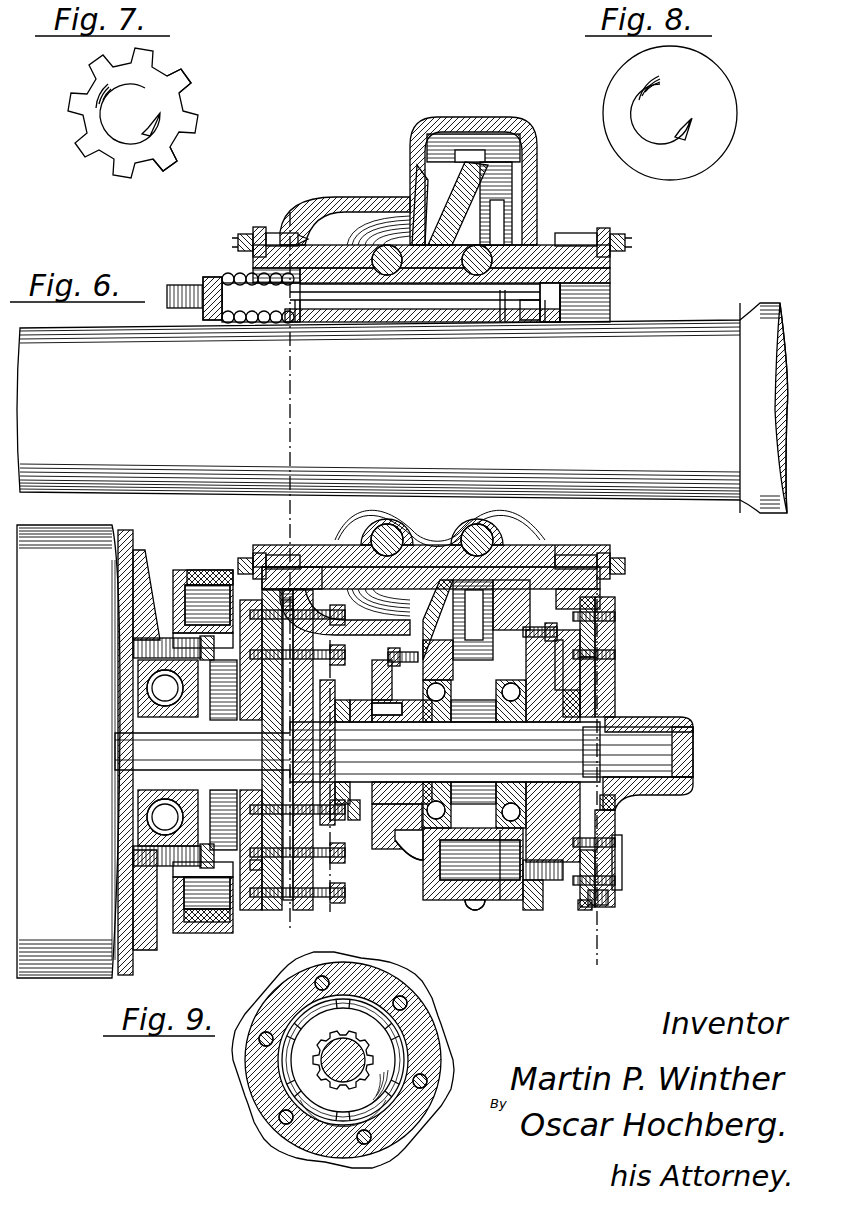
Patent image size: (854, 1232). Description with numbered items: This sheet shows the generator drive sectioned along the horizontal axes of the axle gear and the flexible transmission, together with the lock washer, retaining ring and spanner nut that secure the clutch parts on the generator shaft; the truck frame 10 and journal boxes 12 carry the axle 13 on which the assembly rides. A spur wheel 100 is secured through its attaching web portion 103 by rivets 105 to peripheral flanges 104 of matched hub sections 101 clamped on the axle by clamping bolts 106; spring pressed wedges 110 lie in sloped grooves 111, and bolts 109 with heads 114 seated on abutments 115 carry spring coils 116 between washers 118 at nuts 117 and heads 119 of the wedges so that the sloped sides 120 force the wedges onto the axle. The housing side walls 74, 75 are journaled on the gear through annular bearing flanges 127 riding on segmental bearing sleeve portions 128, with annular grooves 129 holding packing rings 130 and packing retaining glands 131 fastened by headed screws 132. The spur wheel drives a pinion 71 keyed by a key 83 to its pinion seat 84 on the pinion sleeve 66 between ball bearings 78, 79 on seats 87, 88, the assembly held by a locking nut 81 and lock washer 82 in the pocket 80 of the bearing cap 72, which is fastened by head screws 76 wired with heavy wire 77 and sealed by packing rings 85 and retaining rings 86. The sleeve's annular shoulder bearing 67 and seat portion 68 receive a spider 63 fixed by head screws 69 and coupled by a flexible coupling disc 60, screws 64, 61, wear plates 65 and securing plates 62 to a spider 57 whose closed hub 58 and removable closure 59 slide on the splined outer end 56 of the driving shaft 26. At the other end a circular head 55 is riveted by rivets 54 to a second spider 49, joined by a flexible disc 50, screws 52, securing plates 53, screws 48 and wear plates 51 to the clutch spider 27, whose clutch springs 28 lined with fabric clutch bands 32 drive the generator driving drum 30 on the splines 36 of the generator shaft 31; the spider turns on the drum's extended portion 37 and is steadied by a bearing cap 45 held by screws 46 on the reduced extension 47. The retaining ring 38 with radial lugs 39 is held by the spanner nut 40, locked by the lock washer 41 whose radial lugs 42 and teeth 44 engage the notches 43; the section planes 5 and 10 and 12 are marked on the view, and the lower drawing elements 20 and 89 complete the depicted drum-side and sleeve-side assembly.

In FIG. 6, the section line 5 is at (268, 215).
In FIG. 6, the truck frame 10 is at (322, 642).
In FIG. 6, the journal boxes 12 is at (608, 580).
In FIG. 6, the axle 13 is at (720, 322).
In FIG. 6, the drum 20 is at (100, 972).
In FIG. 6, the driving shaft 26 is at (630, 712).
In FIG. 9, the driving shaft 26 is at (365, 1060).
In FIG. 6, the clutch spider 27 is at (262, 605).
In FIG. 6, the clutch springs 28 is at (172, 590).
In FIG. 6, the generator driving drum 30 is at (185, 572).
In FIG. 6, the generator shaft 31 is at (115, 775).
In FIG. 6, the fabric clutch bands 32 is at (205, 568).
In FIG. 6, the splines 36 is at (196, 746).
In FIG. 9, the splines 36 is at (335, 1090).
In FIG. 6, the extended portion 37 is at (140, 720).
In FIG. 8, the retaining ring 38 is at (738, 122).
In FIG. 6, the retaining ring 38 is at (283, 862).
In FIG. 8, the radial lugs 39 is at (656, 88).
In FIG. 6, the spanner nut 40 is at (280, 840).
In FIG. 9, the spanner nut 40 is at (362, 1032).
In FIG. 7, the lock washer 41 is at (182, 118).
In FIG. 6, the lock washer 41 is at (313, 845).
In FIG. 7, the radial lugs 42 is at (122, 88).
In FIG. 9, the notches 43 is at (385, 1115).
In FIG. 7, the teeth 44 is at (165, 80).
In FIG. 6, the teeth 44 is at (300, 700).
In FIG. 9, the teeth 44 is at (375, 1012).
In FIG. 6, the bearing cap 45 is at (305, 720).
In FIG. 9, the bearing cap 45 is at (410, 1103).
In FIG. 6, the screws 46 is at (275, 812).
In FIG. 9, the screws 46 is at (265, 1040).
In FIG. 6, the reduced extension 47 is at (345, 830).
In FIG. 6, the screws 48 is at (296, 640).
In FIG. 6, the second spider 49 is at (340, 862).
In FIG. 6, the flexible disc 50 is at (200, 575).
In FIG. 9, the flexible disc 50 is at (243, 1055).
In FIG. 6, the wear plates 51 is at (300, 567).
In FIG. 6, the screws 52 is at (300, 872).
In FIG. 6, the securing plates 53 is at (268, 875).
In FIG. 6, the rivets 54 is at (338, 690).
In FIG. 6, the circular head 55 is at (362, 722).
In FIG. 6, the outer end 56 is at (670, 722).
In FIG. 6, the spider 57 is at (640, 800).
In FIG. 6, the closed hub 58 is at (675, 790).
In FIG. 6, the removable closure 59 is at (696, 755).
In FIG. 6, the flexible coupling disc 60 is at (612, 598).
In FIG. 6, the screws 61 is at (618, 650).
In FIG. 6, the securing plates 62 is at (618, 607).
In FIG. 6, the spider 63 is at (585, 908).
In FIG. 6, the screws 64 is at (620, 866).
In FIG. 6, the wear plates 65 is at (605, 905).
In FIG. 6, the pinion sleeve 66 is at (395, 712).
In FIG. 6, the annular shoulder bearing 67 is at (612, 812).
In FIG. 6, the seat portion 68 is at (545, 712).
In FIG. 6, the head screws 69 is at (505, 712).
In FIG. 6, the pinion 71 is at (485, 900).
In FIG. 6, the bearing cap 72 is at (436, 678).
In FIG. 6, the side wall 74 is at (358, 200).
In FIG. 6, the side wall 75 is at (520, 210).
In FIG. 6, the head screws 76 is at (398, 650).
In FIG. 6, the heavy wire 77 is at (560, 665).
In FIG. 6, the ball bearing 78 is at (440, 898).
In FIG. 6, the ball bearing 79 is at (500, 900).
In FIG. 6, the pocket 80 is at (360, 782).
In FIG. 9, the pocket 80 is at (300, 1012).
In FIG. 6, the locking nut 81 is at (430, 712).
In FIG. 6, the lock washer 82 is at (380, 850).
In FIG. 6, the key 83 is at (480, 712).
In FIG. 6, the pinion seat 84 is at (440, 700).
In FIG. 6, the packing rings 85 is at (612, 690).
In FIG. 6, the retaining rings 86 is at (618, 700).
In FIG. 6, the seat 87 is at (420, 860).
In FIG. 6, the seat 88 is at (528, 912).
In FIG. 6, the bolt 89 is at (545, 890).
In FIG. 6, the spur wheel 100 is at (465, 150).
In FIG. 6, the hub sections 101 is at (612, 270).
In FIG. 6, the attaching web portion 103 is at (440, 180).
In FIG. 6, the peripheral flanges 104 is at (412, 180).
In FIG. 6, the rivets 105 is at (510, 185).
In FIG. 6, the clamping bolts 106 is at (387, 245).
In FIG. 6, the bolts 109 is at (527, 322).
In FIG. 6, the spring pressed wedges 110 is at (306, 322).
In FIG. 6, the grooves 111 is at (405, 322).
In FIG. 6, the heads 114 is at (560, 322).
In FIG. 6, the abutments 115 is at (545, 322).
In FIG. 6, the spring coils 116 is at (228, 276).
In FIG. 6, the nuts 117 is at (205, 283).
In FIG. 6, the washers 118 is at (222, 318).
In FIG. 6, the heads 119 is at (296, 322).
In FIG. 6, the sloped sides 120 is at (345, 322).
In FIG. 6, the annular bearing flanges 127 is at (300, 235).
In FIG. 6, the segmental bearing sleeve portions 128 is at (500, 322).
In FIG. 6, the annular grooves 129 is at (565, 545).
In FIG. 6, the packing rings 130 is at (300, 545).
In FIG. 6, the packing retaining glands 131 is at (255, 240).
In FIG. 6, the headed screws 132 is at (238, 242).